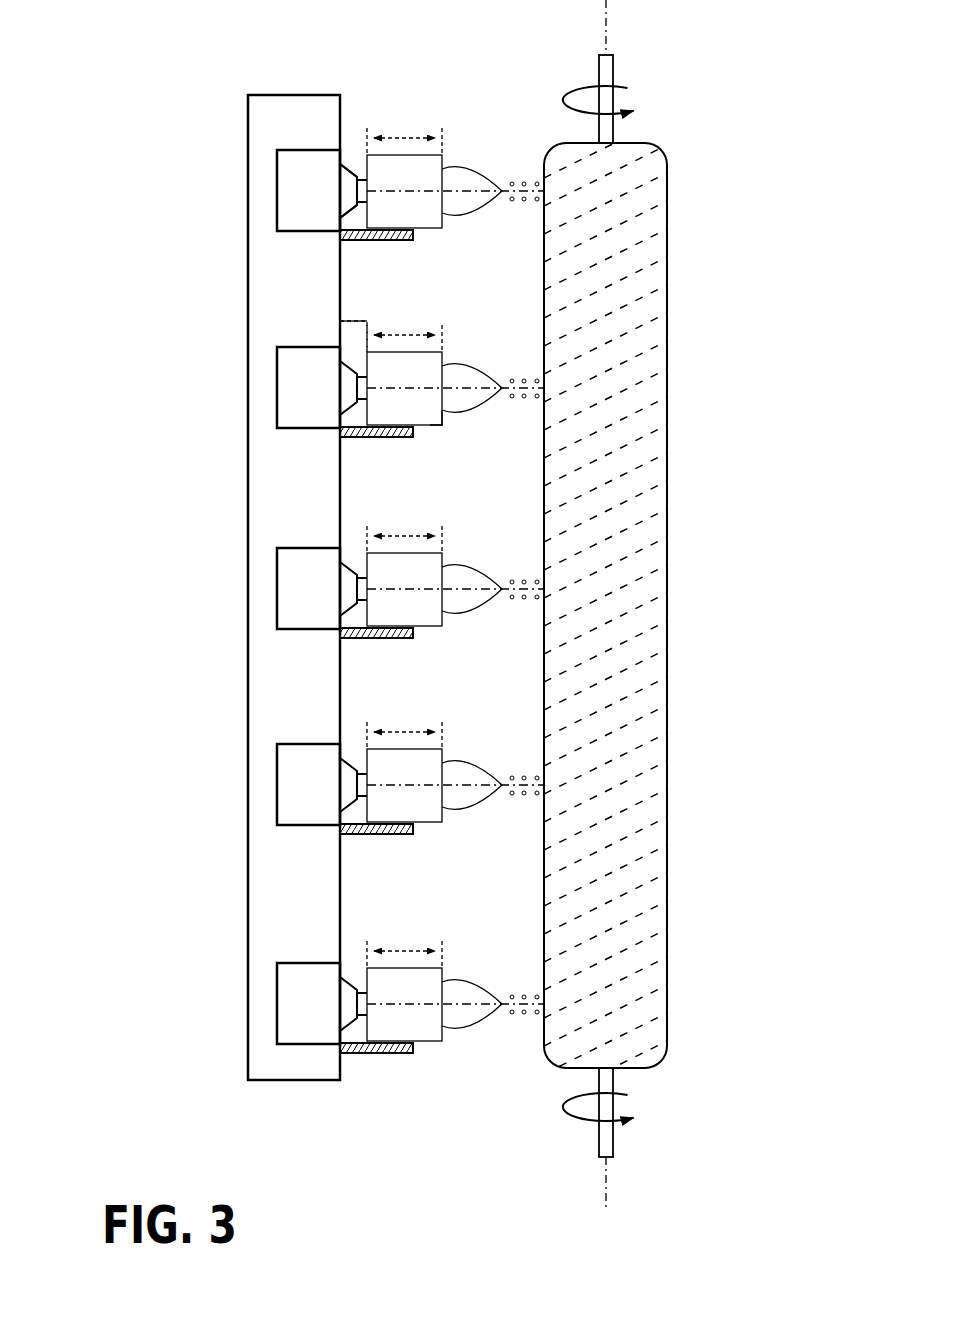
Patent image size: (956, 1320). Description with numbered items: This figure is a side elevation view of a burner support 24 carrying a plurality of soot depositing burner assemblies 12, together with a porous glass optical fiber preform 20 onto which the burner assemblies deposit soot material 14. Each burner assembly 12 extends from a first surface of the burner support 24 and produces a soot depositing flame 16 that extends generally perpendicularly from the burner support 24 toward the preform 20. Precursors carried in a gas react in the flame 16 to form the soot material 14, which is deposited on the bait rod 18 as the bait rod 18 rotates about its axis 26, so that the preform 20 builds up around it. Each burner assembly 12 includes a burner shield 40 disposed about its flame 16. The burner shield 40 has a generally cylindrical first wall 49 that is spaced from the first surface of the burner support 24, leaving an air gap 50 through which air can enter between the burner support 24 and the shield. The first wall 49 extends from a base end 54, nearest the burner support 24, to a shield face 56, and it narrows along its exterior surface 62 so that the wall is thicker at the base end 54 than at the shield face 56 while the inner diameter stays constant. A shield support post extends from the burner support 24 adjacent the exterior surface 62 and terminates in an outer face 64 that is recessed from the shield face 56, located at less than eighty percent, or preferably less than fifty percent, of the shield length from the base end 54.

The soot depositing burner assembly 12 is at (443, 645).
The soot material 14 is at (525, 182).
The soot depositing flame 16 is at (467, 168).
The bait rod 18 is at (607, 100).
The porous glass optical fiber preform 20 is at (667, 621).
The burner support 24 is at (278, 105).
The axis of rotation 26 is at (608, 8).
The burner shield 40 is at (445, 154).
The first wall 49 is at (429, 630).
The air gap 50 is at (355, 322).
The base end 54 is at (367, 414).
The shield face 56 is at (442, 417).
The exterior surface 62 is at (377, 242).
The outer face 64 is at (378, 163).